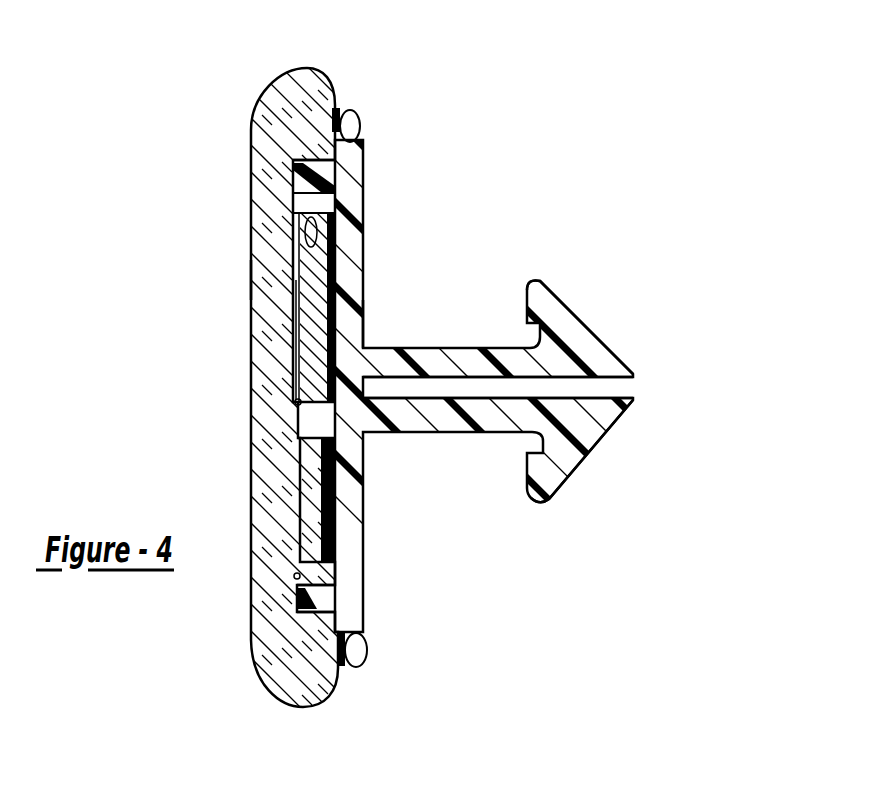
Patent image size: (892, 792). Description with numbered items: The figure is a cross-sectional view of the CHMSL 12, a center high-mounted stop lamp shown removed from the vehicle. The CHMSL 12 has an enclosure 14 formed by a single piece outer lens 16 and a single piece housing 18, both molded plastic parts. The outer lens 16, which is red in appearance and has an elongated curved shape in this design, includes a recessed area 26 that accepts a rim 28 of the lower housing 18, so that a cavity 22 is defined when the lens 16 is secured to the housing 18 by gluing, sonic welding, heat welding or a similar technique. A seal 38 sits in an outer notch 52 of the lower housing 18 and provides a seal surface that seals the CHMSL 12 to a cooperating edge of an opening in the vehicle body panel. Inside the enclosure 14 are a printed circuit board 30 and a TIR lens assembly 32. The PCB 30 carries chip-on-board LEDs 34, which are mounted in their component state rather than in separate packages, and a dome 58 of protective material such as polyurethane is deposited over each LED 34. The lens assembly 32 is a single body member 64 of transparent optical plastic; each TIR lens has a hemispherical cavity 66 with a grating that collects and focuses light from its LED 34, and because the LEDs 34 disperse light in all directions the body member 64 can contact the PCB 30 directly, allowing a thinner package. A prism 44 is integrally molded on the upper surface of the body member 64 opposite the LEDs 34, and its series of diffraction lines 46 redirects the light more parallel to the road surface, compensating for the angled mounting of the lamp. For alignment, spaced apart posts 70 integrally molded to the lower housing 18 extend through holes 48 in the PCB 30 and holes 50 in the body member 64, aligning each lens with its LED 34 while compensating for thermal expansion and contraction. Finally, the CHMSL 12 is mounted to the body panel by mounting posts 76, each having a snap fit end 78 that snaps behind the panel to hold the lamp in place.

The CHMSL 12 is at (553, 183).
The enclosure 14 is at (248, 146).
The outer lens 16 is at (250, 279).
The housing 18 is at (350, 250).
The cavity 22 is at (318, 205).
The recessed area 26 is at (295, 579).
The rim 28 is at (318, 584).
The printed circuit board 30 is at (335, 330).
The TIR lens assembly 32 is at (297, 404).
The LEDs 34 is at (316, 222).
The seal 38 is at (358, 650).
The prism 44 is at (298, 246).
The diffraction lines 46 is at (296, 318).
The holes 48 is at (338, 495).
The holes 50 is at (300, 432).
The outer notch 52 is at (358, 128).
The dome 58 is at (312, 238).
The body member 64 is at (296, 352).
The hemispherical cavity 66 is at (336, 282).
The posts 70 is at (322, 414).
The mounting posts 76 is at (604, 320).
The snap fit end 78 is at (603, 445).